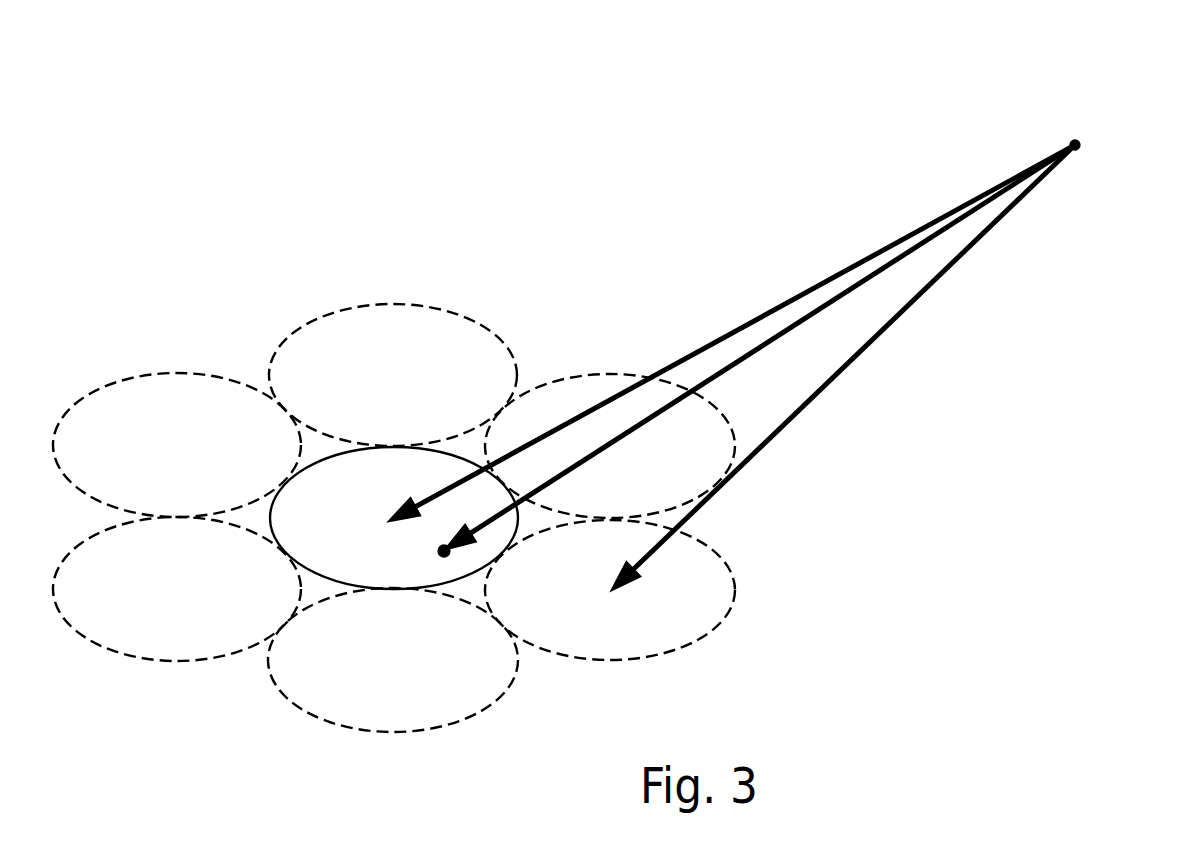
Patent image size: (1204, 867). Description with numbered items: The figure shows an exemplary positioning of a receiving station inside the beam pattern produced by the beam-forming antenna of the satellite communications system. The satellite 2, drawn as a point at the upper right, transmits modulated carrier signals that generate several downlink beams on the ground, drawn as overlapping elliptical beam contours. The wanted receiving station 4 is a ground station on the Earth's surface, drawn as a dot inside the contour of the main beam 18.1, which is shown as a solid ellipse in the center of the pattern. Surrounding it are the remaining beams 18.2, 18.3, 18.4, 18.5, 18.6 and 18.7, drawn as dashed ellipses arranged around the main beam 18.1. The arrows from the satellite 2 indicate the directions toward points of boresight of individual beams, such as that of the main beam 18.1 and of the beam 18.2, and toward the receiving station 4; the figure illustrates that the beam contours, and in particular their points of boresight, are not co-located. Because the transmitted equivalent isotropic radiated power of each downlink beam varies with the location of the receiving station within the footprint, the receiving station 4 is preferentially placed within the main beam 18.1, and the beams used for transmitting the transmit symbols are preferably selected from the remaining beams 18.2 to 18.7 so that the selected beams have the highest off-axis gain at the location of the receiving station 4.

The satellite 2 is at (1079, 141).
The receiving station 4 is at (444, 556).
The main beam 18.1 is at (394, 518).
The beam 18.2 is at (610, 590).
The beam 18.3 is at (393, 660).
The beam 18.4 is at (177, 589).
The beam 18.5 is at (177, 445).
The beam 18.6 is at (393, 375).
The beam 18.7 is at (610, 446).